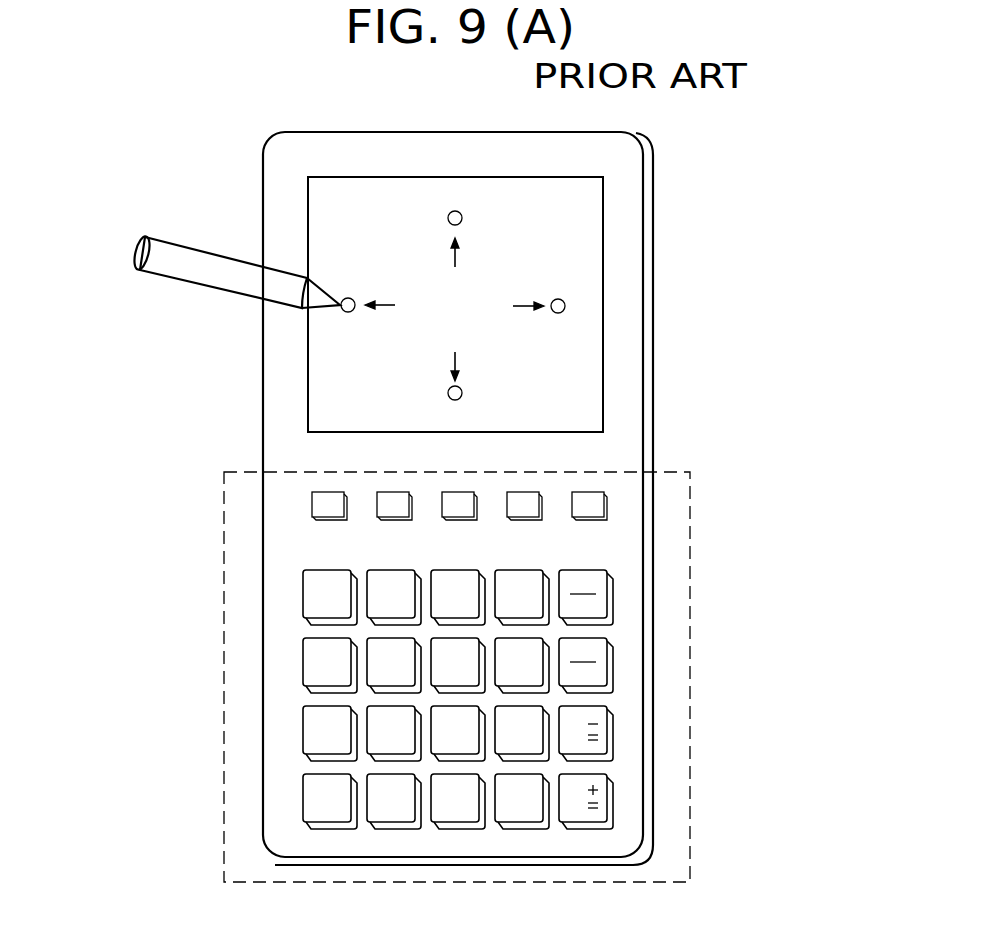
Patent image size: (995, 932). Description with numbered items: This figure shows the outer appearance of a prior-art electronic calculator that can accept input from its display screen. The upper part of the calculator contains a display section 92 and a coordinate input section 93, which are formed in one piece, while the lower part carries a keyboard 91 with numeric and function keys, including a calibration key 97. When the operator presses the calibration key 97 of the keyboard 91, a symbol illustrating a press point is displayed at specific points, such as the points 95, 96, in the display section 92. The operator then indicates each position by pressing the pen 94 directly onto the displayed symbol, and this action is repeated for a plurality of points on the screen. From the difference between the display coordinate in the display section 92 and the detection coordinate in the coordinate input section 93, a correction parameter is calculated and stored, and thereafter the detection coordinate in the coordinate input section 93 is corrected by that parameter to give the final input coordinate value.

The keyboard 91 is at (690, 627).
The display section 92 is at (575, 303).
The coordinate input section 93 is at (592, 210).
The pen 94 is at (165, 250).
The specific point 95 is at (343, 311).
The specific point 96 is at (455, 210).
The calibration key 97 is at (312, 503).